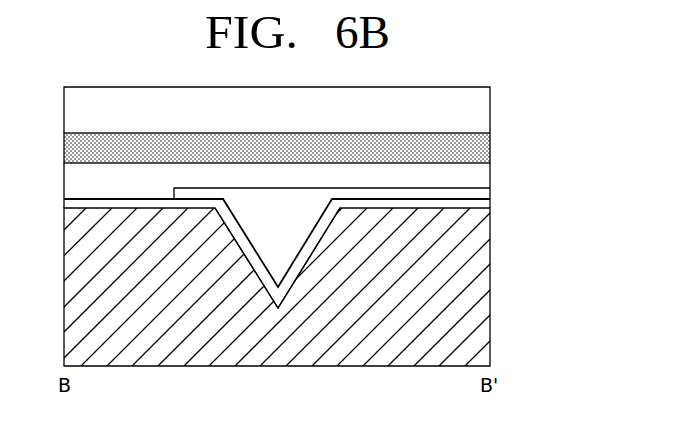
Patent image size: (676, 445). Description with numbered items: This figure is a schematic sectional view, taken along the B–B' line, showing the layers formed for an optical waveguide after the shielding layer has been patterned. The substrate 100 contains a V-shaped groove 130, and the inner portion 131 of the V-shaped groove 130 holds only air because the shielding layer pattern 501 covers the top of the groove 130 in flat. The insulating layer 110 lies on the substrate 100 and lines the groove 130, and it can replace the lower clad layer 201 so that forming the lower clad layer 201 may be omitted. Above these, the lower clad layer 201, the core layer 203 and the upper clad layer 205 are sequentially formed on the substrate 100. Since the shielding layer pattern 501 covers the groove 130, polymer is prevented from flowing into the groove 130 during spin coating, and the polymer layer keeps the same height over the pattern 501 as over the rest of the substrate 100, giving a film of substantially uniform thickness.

The substrate 100 is at (480, 310).
The insulating layer 110 is at (482, 205).
The V-shaped groove 130 is at (304, 268).
The inner portion of the V-shaped groove 131 is at (279, 247).
The lower clad layer 201 is at (482, 173).
The core layer 203 is at (483, 147).
The upper clad layer 205 is at (478, 107).
The shielding layer pattern 501 is at (380, 189).